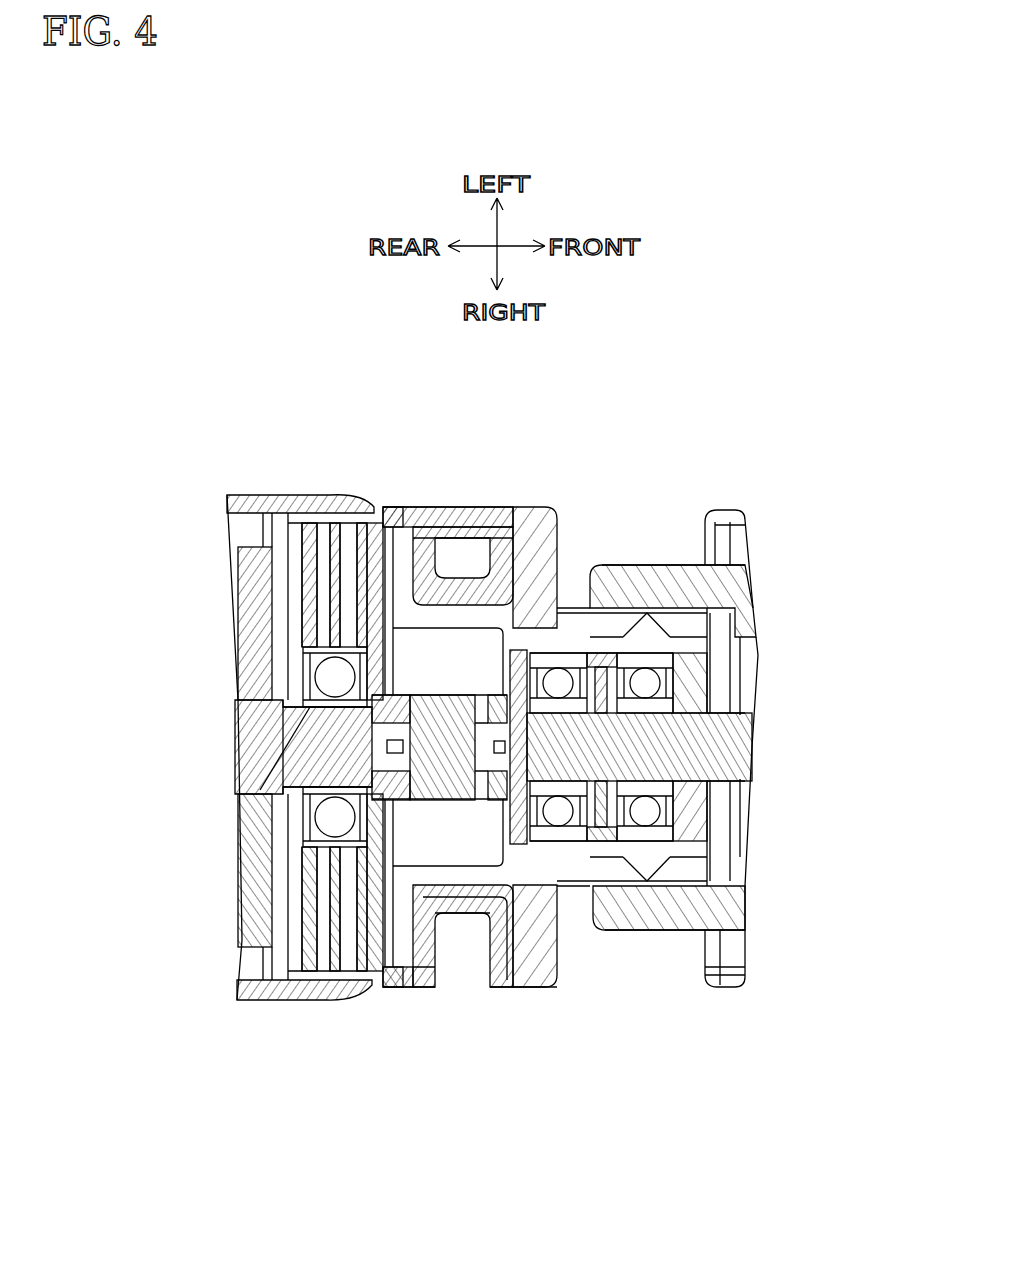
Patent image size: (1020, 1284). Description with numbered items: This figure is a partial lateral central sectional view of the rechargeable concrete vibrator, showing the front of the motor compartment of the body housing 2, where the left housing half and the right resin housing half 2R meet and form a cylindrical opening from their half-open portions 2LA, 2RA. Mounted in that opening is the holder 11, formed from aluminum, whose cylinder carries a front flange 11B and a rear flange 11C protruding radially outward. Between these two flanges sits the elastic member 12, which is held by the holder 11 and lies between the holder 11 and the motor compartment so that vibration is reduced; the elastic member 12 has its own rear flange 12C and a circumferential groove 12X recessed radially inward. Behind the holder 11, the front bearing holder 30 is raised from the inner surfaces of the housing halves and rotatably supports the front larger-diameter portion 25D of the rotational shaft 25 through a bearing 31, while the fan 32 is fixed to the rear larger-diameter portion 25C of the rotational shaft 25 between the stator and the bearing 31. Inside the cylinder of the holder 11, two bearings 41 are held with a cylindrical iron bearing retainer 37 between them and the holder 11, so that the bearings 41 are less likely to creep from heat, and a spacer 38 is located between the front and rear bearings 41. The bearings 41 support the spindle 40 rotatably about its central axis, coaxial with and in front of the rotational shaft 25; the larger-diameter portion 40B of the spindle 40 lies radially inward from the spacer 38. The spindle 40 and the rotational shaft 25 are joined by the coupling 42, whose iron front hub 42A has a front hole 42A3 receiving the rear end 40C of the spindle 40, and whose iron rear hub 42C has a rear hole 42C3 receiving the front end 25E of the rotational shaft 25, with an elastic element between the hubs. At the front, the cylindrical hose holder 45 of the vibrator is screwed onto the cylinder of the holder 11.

The body housing 2 is at (280, 493).
The right resin housing half 2R is at (283, 1000).
The half-open portion 2LA is at (463, 505).
The half-open portion 2RA is at (470, 987).
The holder 11 is at (524, 633).
The front flange 11B is at (550, 508).
The rear flange 11C is at (400, 500).
The elastic member 12 is at (500, 503).
The rear flange 12C is at (427, 503).
The groove 12X is at (434, 505).
The rotational shaft 25 is at (233, 750).
The rear larger-diameter portion 25C is at (233, 713).
The front larger-diameter portion 25D is at (235, 803).
The front end 25E is at (237, 777).
The front bearing holder 30 is at (365, 500).
The bearing 31 is at (300, 828).
The fan 32 is at (252, 493).
The bearing retainer 37 is at (692, 930).
The spacer 38 is at (612, 882).
The spindle 40 is at (730, 745).
The larger-diameter portion 40B is at (597, 565).
The rear end 40C is at (712, 800).
The bearings 41 is at (558, 680).
The coupling 42 is at (440, 868).
The front hub 42A is at (517, 850).
The front hole 42A3 is at (712, 825).
The rear hub 42C is at (427, 800).
The rear hole 42C3 is at (243, 748).
The hose holder 45 is at (733, 510).